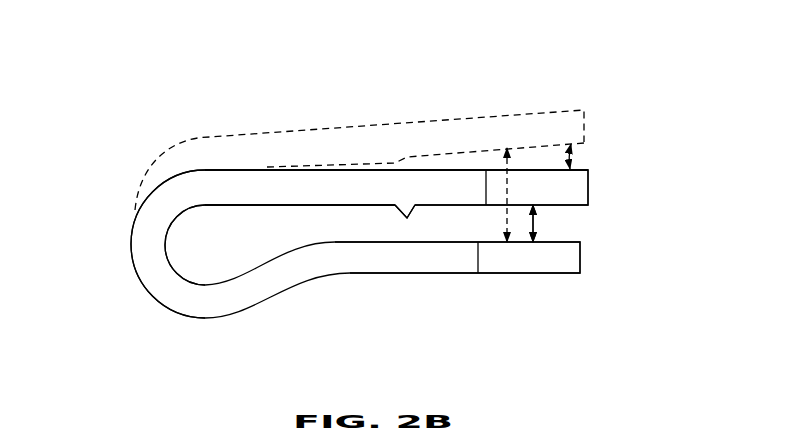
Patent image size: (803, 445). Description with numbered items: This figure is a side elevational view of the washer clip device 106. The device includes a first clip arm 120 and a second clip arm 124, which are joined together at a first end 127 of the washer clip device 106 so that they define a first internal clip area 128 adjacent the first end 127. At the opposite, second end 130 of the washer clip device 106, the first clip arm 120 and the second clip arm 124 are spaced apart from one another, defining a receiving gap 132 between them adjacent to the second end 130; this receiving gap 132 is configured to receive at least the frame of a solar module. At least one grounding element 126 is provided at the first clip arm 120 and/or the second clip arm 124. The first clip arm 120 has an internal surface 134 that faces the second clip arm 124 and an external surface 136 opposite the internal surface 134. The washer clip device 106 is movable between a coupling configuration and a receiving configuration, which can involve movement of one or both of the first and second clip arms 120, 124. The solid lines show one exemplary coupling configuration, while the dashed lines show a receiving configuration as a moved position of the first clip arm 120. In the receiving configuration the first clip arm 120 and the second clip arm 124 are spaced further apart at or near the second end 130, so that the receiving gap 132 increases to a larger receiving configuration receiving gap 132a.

The washer clip device 106 is at (162, 130).
The first clip arm 120 is at (508, 112).
The second clip arm 124 is at (583, 253).
The grounding element 126 is at (398, 210).
The first end 127 is at (132, 247).
The first internal clip area 128 is at (210, 253).
The second end 130 is at (598, 240).
The receiving gap 132 is at (532, 223).
The receiving configuration receiving gap 132a is at (505, 180).
The internal surface 134 is at (280, 205).
The external surface 136 is at (225, 170).